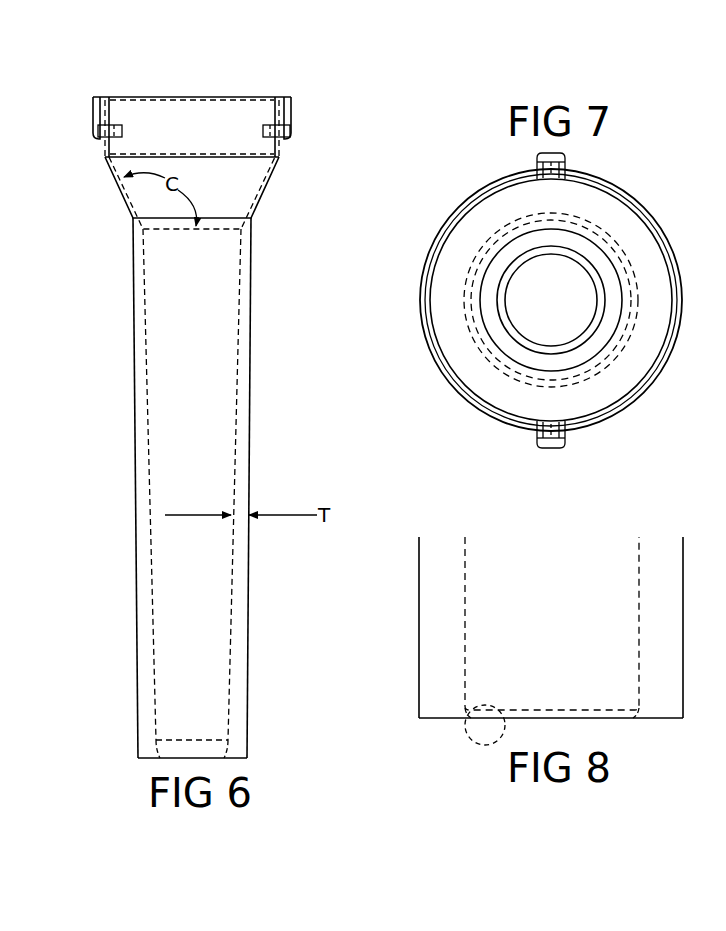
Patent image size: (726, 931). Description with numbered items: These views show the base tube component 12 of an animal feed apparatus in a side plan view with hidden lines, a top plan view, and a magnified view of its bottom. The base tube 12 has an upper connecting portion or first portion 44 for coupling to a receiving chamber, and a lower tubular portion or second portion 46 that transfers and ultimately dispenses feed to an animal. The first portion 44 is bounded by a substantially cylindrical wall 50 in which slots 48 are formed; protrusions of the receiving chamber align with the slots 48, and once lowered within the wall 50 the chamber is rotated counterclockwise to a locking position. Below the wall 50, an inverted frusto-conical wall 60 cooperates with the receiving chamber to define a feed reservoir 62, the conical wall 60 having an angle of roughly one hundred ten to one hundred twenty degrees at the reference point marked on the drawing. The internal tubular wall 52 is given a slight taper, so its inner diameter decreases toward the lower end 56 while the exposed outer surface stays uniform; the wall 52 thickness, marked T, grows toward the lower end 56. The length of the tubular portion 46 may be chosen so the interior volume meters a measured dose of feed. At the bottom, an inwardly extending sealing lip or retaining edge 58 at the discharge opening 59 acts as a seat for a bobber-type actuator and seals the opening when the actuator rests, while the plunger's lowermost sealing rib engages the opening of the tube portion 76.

In FIG. 6, the base tube component 12 is at (300, 66).
In FIG. 6, the first portion 44 is at (74, 96).
In FIG. 6, the second portion 46 is at (74, 218).
In FIG. 7, the slots 48 is at (563, 162).
In FIG. 6, the cylindrical wall 50 is at (292, 122).
In FIG. 7, the cylindrical wall 50 is at (658, 222).
In FIG. 6, the internal tubular wall 52 is at (247, 330).
In FIG. 7, the internal tubular wall 52 is at (602, 343).
In FIG. 8, the internal tubular wall 52 is at (663, 615).
In FIG. 8, the lower end 56 is at (398, 712).
In FIG. 7, the retaining edge 58 is at (520, 343).
In FIG. 8, the retaining edge 58 is at (476, 745).
In FIG. 6, the discharge opening 59 is at (210, 758).
In FIG. 8, the discharge opening 59 is at (565, 718).
In FIG. 6, the inverted frusto-conical wall 60 is at (260, 182).
In FIG. 7, the inverted frusto-conical wall 60 is at (603, 208).
In FIG. 6, the feed reservoir 62 is at (227, 183).
In FIG. 6, the opening of the tube portion 76 is at (253, 210).